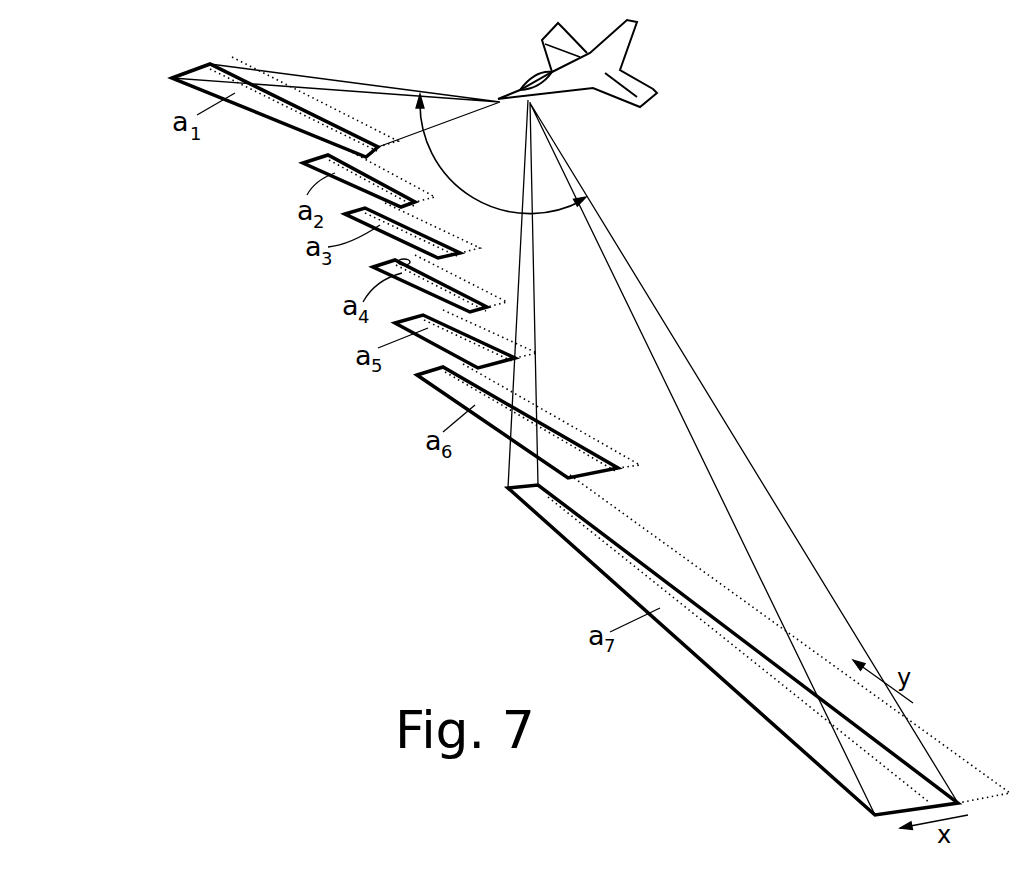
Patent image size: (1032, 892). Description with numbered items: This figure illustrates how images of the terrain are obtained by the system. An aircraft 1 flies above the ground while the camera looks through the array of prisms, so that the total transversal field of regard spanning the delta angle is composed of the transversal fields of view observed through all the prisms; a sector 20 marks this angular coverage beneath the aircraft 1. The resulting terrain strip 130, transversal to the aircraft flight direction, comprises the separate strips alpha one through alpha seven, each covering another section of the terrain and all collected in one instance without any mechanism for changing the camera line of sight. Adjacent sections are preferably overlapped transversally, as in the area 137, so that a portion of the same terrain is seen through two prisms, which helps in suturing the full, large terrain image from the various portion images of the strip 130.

The aircraft 1 is at (623, 43).
The angular sector / antenna beam swath angle 20 is at (428, 118).
The terrain strip 130 is at (320, 332).
The overlap area 137 is at (405, 262).